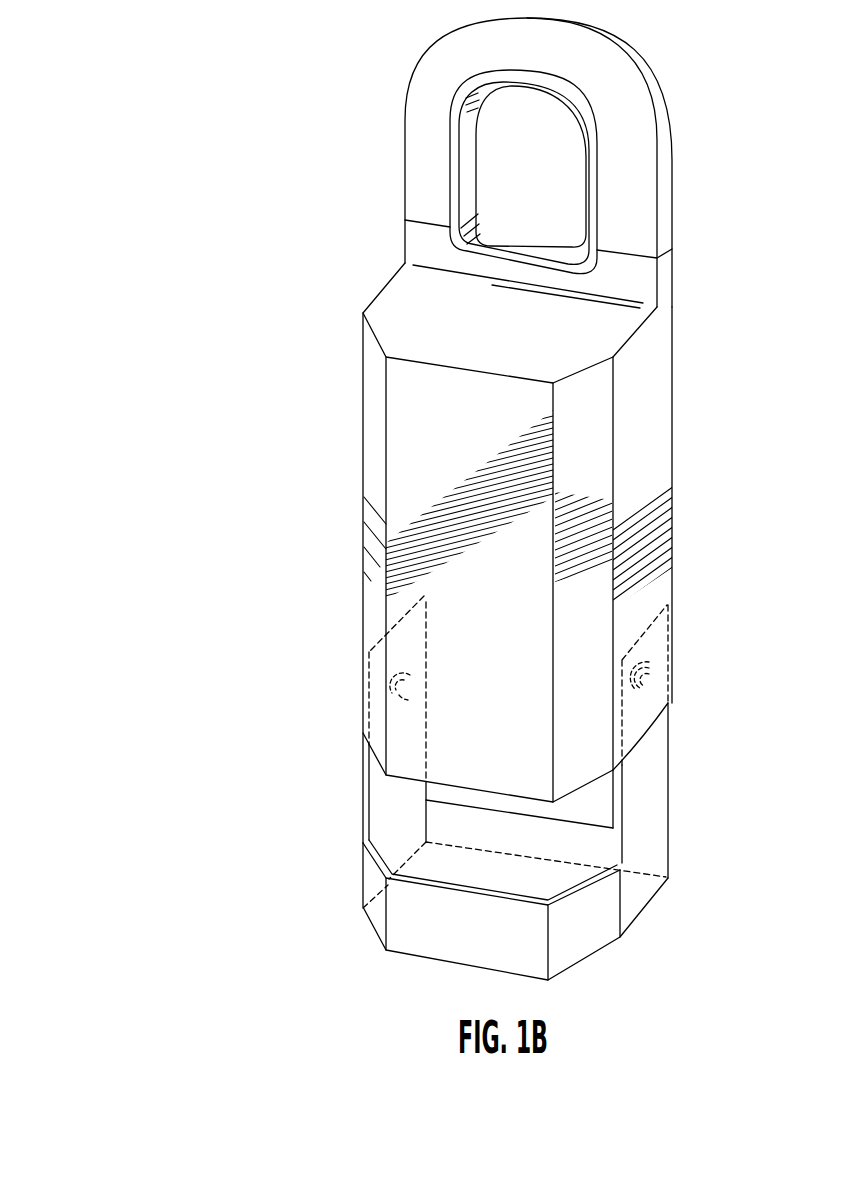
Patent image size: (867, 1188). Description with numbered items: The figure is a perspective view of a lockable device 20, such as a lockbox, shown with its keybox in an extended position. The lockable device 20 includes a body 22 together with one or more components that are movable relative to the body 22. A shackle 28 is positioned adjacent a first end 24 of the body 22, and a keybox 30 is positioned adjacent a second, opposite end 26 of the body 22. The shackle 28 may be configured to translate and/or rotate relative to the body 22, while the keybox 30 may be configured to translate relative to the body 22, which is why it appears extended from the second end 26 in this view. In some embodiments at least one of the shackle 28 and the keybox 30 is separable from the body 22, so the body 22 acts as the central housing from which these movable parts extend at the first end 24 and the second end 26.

The lockable device 20 is at (120, 174).
The body 22 is at (398, 375).
The first end 24 is at (428, 299).
The second end 26 is at (647, 729).
The shackle 28 is at (620, 217).
The keybox 30 is at (362, 907).